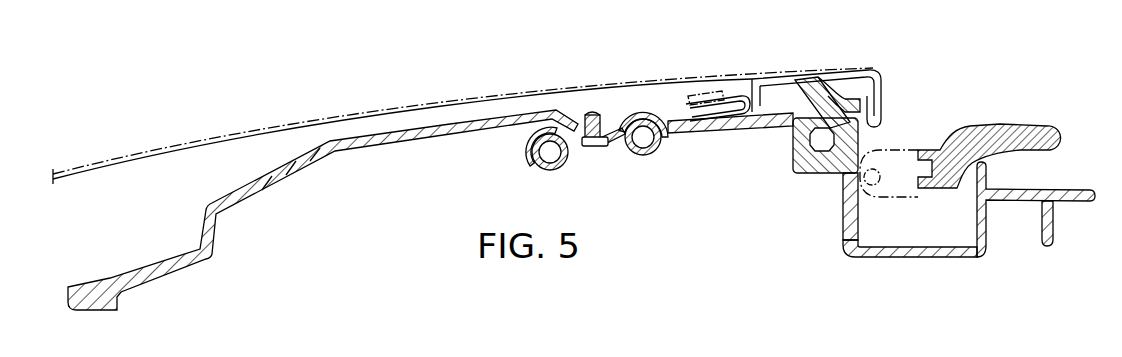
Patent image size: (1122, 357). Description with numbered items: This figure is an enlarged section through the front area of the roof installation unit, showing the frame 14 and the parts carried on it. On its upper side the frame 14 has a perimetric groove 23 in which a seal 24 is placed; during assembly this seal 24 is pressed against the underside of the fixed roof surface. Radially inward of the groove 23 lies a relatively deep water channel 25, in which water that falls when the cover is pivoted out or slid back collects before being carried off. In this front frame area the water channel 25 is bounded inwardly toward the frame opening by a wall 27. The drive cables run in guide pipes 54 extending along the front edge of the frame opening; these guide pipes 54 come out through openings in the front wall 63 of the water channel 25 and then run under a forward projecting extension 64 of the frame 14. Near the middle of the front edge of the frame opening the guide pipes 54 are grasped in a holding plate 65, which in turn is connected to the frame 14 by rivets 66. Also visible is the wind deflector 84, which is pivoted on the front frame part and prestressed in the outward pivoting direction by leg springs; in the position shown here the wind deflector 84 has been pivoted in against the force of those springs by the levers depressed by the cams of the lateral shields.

The frame 14 is at (392, 140).
The forward projecting extension 64 is at (285, 172).
The holding plate 65 is at (525, 137).
The guide pipe 54 is at (632, 158).
The rivet 66 is at (594, 125).
The front wall 63 is at (850, 226).
The water channel 25 is at (921, 246).
The wall 27 is at (988, 222).
The perimetric groove 23 is at (808, 157).
The seal 24 is at (828, 92).
The wind deflector 84 is at (1015, 128).